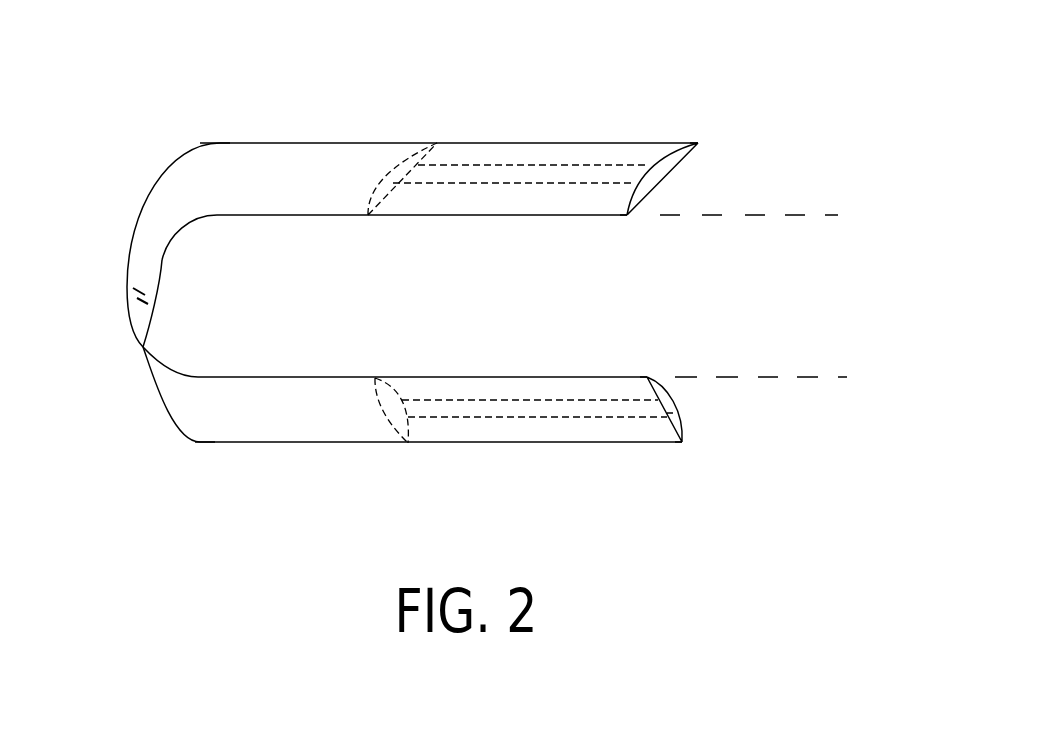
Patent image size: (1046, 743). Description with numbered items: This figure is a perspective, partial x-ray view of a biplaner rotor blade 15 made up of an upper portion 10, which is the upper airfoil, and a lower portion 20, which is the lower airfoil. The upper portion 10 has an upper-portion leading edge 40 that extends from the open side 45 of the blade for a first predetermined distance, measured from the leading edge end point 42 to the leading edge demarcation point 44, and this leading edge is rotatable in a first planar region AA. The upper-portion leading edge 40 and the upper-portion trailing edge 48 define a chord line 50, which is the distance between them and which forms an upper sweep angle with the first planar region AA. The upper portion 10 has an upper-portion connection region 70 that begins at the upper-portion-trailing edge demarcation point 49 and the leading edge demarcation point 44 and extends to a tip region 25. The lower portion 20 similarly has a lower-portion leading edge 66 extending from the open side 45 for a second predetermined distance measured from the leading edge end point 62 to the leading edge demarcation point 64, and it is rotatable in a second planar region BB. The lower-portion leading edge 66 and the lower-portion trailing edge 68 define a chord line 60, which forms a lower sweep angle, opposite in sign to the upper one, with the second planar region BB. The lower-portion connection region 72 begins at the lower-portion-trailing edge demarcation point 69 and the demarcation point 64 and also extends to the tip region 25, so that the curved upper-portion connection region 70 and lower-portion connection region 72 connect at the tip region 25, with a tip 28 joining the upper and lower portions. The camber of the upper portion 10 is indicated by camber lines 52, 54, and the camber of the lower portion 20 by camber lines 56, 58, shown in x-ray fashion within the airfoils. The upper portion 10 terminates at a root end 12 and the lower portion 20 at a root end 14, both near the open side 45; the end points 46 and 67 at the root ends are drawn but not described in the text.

The biplaner rotor blade 15 is at (413, 85).
The upper portion 10 is at (485, 178).
The lower portion 20 is at (476, 412).
The root end 12 is at (663, 171).
The root end 14 is at (678, 408).
The tip region 25 is at (130, 292).
The tip 28 is at (147, 302).
The upper-portion leading edge 40 is at (308, 215).
The leading edge end point 42 is at (627, 215).
The leading edge demarcation point 44 is at (217, 215).
The open side 45 is at (580, 300).
The first tube top end 46 is at (698, 143).
The upper-portion trailing edge 48 is at (557, 143).
The upper-portion-trailing edge demarcation point 49 is at (222, 143).
The chord line 50 is at (395, 190).
The camber line 52 is at (520, 185).
The camber line 54 is at (510, 165).
The camber line 56 is at (520, 418).
The camber line 58 is at (515, 400).
The chord line 60 is at (390, 417).
The leading edge end point 62 is at (647, 377).
The leading edge demarcation point 64 is at (197, 377).
The lower-portion leading edge 66 is at (433, 377).
The second tube bottom end 67 is at (682, 442).
The lower-portion trailing edge 68 is at (447, 442).
The lower-portion-trailing edge demarcation point 69 is at (197, 442).
The upper-portion connection region 70 is at (140, 223).
The lower-portion connection region 72 is at (157, 395).
The first planar region AA is at (752, 197).
The second planar region BB is at (738, 360).